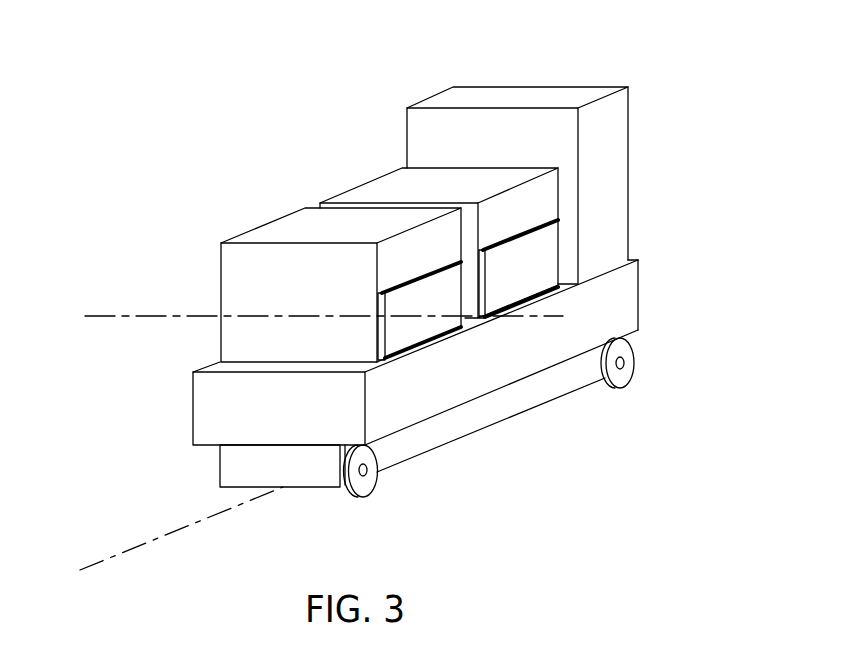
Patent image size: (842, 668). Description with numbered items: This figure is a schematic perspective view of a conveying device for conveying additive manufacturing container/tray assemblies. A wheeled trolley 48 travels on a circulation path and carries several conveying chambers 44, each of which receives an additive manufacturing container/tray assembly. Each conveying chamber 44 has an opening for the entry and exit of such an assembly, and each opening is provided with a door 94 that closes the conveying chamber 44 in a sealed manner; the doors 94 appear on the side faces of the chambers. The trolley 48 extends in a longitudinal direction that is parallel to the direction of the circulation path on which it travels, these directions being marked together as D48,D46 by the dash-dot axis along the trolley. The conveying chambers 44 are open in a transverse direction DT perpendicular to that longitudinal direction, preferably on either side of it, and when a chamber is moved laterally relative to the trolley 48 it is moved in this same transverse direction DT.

The conveying chamber 44 is at (258, 218).
The door 94 is at (552, 250).
The trolley 48 is at (647, 316).
The transverse direction DT is at (143, 314).
The longitudinal direction of the trolley and direction of the circulation path D48,D46 is at (158, 537).